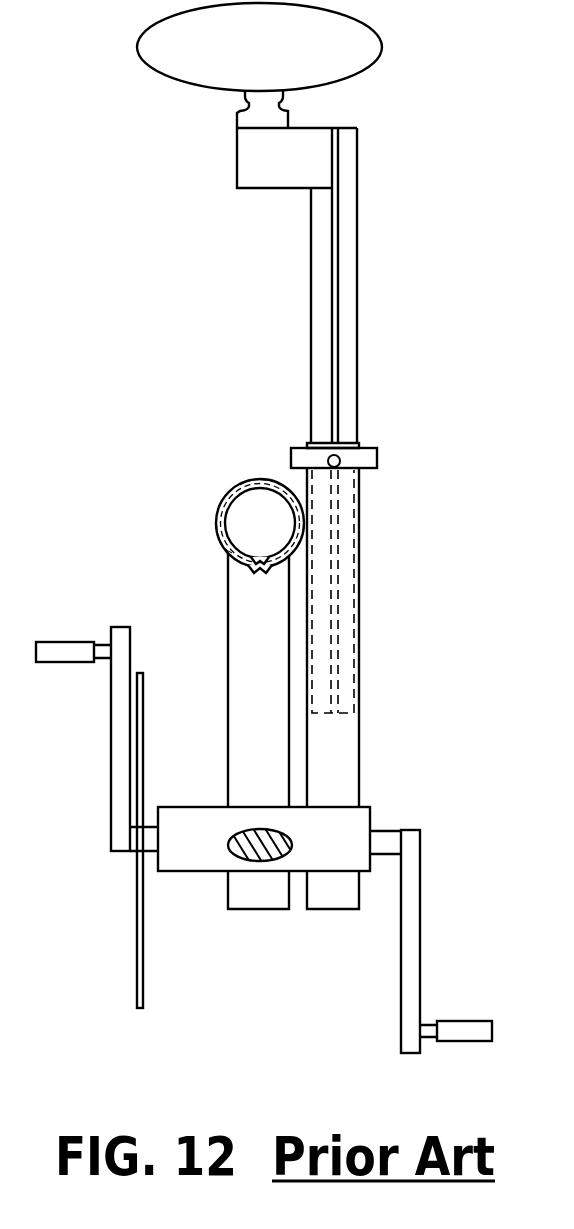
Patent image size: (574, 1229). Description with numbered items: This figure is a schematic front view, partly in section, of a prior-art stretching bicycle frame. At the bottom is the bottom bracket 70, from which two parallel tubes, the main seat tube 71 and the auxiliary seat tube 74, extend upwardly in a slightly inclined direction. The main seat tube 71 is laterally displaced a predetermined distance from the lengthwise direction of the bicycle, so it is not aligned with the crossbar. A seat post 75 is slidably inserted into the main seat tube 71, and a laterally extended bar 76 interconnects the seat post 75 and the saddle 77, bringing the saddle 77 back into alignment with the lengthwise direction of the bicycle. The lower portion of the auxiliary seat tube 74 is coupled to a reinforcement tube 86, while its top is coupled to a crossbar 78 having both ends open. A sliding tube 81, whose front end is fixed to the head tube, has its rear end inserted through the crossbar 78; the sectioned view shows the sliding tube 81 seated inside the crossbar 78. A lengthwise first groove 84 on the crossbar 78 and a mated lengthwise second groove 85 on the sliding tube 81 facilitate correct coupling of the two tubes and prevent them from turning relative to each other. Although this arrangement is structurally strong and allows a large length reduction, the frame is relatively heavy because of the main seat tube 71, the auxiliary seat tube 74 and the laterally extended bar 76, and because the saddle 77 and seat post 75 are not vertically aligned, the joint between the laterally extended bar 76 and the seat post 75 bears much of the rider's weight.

The bottom bracket 70 is at (207, 865).
The main seat tube 71 is at (352, 748).
The auxiliary seat tube 74 is at (240, 653).
The seat post 75 is at (351, 210).
The laterally extended bar 76 is at (242, 157).
The saddle 77 is at (158, 68).
The crossbar 78 is at (220, 507).
The sliding tube 81 is at (240, 485).
The first groove 84 is at (257, 571).
The second groove 85 is at (222, 547).
The reinforcement tube 86 is at (260, 854).